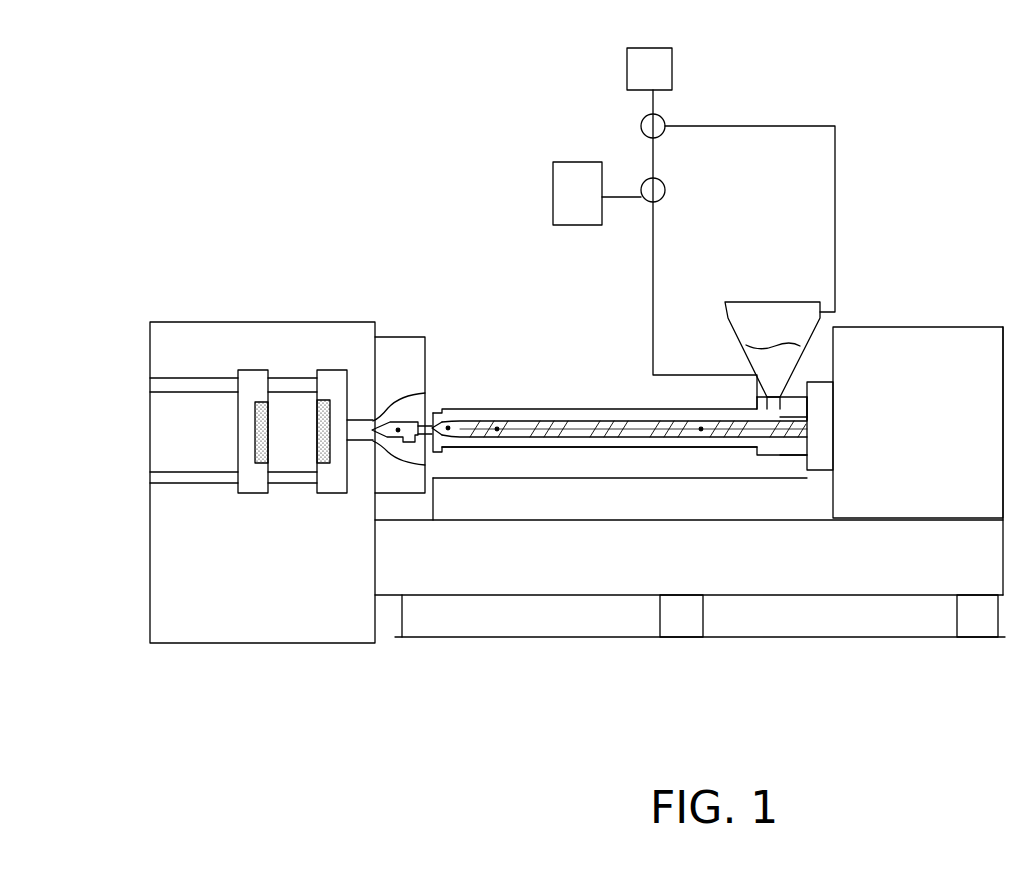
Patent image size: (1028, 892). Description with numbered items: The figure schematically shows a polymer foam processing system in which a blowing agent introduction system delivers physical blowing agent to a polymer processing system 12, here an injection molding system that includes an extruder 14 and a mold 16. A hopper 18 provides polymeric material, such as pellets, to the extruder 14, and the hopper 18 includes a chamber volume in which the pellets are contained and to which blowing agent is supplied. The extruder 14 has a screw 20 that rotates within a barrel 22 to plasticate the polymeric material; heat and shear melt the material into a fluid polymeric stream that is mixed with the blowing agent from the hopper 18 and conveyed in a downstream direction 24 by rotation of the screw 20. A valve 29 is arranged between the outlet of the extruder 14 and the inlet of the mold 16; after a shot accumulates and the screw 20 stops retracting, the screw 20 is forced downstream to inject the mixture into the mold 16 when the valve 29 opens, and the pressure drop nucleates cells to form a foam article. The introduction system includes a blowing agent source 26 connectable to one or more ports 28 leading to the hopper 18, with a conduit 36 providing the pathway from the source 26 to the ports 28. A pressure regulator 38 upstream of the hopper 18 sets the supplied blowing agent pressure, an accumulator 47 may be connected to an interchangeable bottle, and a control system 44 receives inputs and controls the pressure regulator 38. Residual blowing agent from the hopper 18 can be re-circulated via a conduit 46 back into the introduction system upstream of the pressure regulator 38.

The polymer processing system 12 is at (443, 178).
The extruder 14 is at (621, 405).
The mold 16 is at (267, 575).
The hopper 18 is at (722, 312).
The screw 20 is at (701, 432).
The barrel 22 is at (619, 447).
The downstream direction 24 is at (655, 703).
The blowing agent source 26 is at (622, 68).
The port 28 is at (743, 380).
The valve 29 is at (397, 440).
The conduit 36 is at (653, 332).
The pressure regulator 38 is at (667, 185).
The control system 44 is at (565, 162).
The conduit 46 is at (835, 219).
The accumulator 47 is at (662, 120).